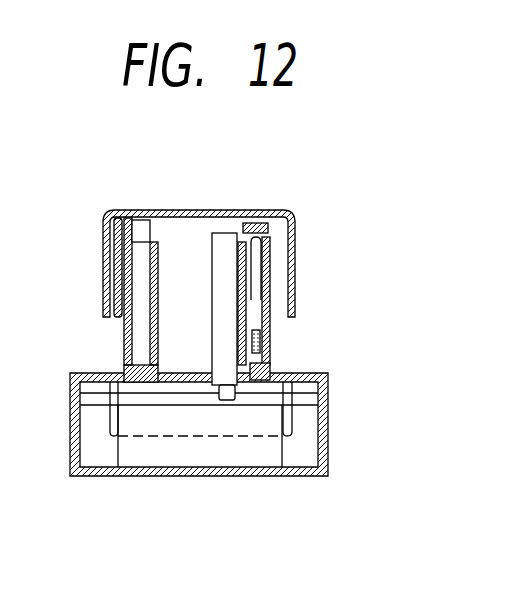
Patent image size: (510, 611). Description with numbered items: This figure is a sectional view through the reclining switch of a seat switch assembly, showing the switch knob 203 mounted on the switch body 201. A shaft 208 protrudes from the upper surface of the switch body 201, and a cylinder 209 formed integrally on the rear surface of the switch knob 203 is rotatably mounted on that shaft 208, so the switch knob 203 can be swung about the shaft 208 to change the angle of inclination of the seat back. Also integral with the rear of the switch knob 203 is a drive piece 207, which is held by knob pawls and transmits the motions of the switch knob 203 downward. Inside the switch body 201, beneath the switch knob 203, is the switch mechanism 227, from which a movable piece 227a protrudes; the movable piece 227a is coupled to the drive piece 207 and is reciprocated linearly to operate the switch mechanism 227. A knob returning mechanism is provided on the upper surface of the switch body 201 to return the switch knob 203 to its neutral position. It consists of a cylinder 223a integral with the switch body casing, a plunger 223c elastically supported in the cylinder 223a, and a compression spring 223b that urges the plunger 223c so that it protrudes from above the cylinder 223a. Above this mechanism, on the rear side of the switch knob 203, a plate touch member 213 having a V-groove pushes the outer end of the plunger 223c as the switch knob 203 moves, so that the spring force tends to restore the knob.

The switch body 201 is at (328, 411).
The switch knob 203 is at (276, 216).
The drive piece 207 is at (220, 233).
The shaft 208 is at (127, 343).
The cylinder 209 is at (103, 233).
The plate touch member 213 is at (253, 212).
The cylinder 223a is at (268, 338).
The compression spring 223b is at (268, 358).
The plunger 223c is at (272, 265).
The switch mechanism 227 is at (158, 452).
The movable piece 227a is at (227, 396).